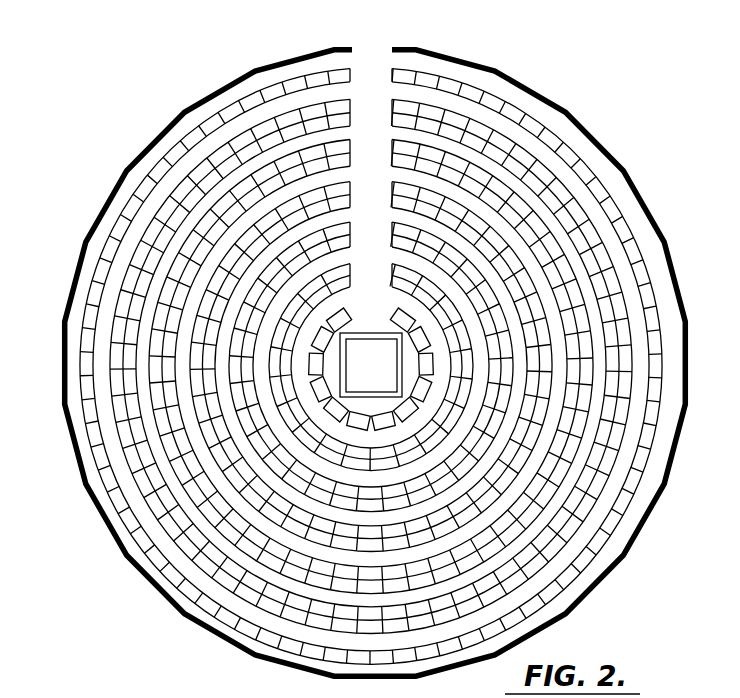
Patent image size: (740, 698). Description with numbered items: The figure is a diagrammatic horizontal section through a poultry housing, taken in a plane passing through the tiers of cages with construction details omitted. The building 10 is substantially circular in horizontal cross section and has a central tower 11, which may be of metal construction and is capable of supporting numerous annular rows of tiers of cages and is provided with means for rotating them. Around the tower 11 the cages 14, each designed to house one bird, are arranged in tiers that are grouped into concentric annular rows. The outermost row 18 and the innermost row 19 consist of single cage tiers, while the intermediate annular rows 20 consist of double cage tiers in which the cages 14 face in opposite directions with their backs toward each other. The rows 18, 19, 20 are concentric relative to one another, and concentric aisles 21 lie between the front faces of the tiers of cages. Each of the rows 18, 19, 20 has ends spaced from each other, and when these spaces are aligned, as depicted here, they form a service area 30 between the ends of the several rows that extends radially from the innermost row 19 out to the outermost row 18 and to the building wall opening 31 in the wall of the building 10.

The building 10 is at (678, 321).
The central tower 11 is at (374, 392).
The cages 14 is at (238, 106).
The outermost row 18 is at (112, 222).
The innermost row 19 is at (339, 315).
The intermediate annular rows 20 is at (151, 308).
The concentric aisles 21 is at (318, 140).
The service area 30 is at (375, 78).
The building wall opening 31 is at (367, 53).